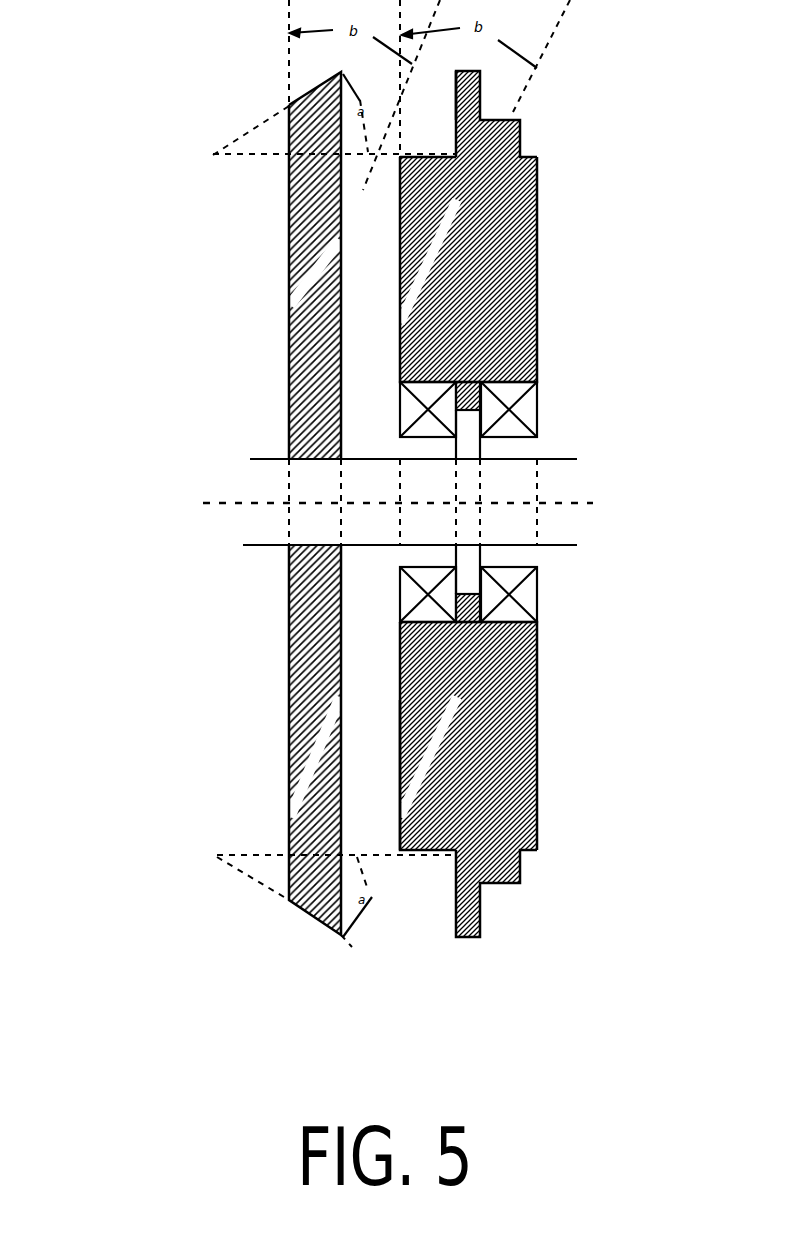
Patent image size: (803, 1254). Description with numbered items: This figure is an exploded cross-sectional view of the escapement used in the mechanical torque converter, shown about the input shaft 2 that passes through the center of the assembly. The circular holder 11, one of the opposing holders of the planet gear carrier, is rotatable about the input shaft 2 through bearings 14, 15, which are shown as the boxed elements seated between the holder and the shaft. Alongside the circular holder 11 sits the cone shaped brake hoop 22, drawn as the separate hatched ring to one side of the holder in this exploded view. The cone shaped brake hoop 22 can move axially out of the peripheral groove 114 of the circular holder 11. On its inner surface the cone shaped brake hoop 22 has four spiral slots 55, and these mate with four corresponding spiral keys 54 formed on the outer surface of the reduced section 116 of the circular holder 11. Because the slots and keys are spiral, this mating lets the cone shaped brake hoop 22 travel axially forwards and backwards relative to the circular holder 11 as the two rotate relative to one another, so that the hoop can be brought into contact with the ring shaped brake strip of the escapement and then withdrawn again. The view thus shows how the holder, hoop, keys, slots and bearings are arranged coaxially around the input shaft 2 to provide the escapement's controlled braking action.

The input shaft 2 is at (367, 515).
The circular holder 11 is at (487, 808).
The bearing 14 is at (517, 628).
The bearing 15 is at (537, 335).
The cone shaped brake hoop 22 is at (298, 830).
The spiral key 54 is at (523, 152).
The spiral slot 55 is at (325, 268).
The peripheral groove 114 is at (456, 86).
The reduced section 116 is at (396, 758).